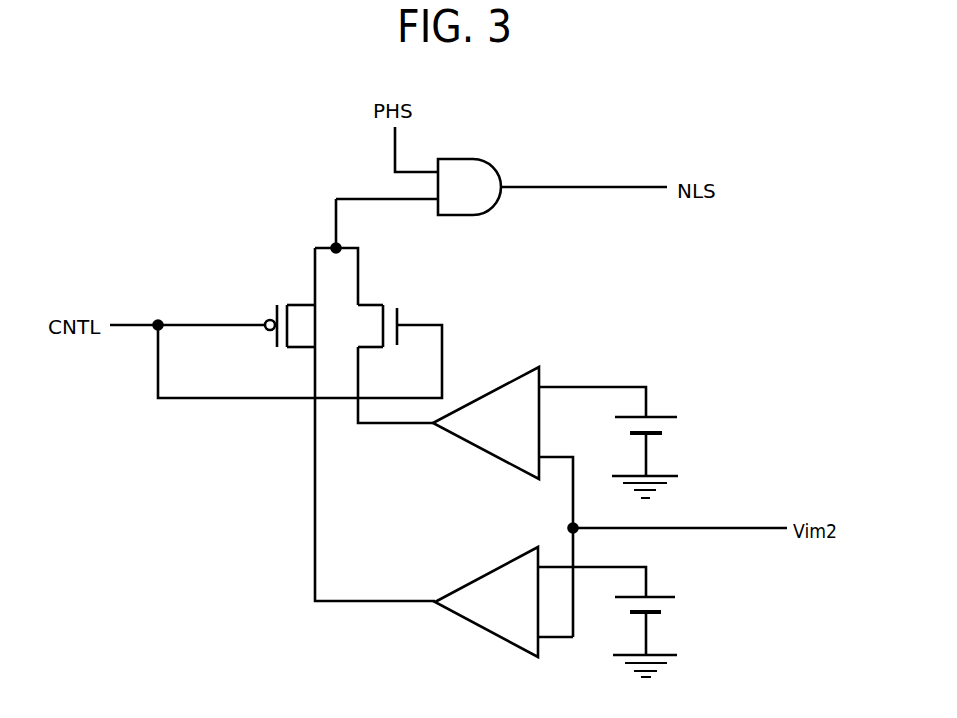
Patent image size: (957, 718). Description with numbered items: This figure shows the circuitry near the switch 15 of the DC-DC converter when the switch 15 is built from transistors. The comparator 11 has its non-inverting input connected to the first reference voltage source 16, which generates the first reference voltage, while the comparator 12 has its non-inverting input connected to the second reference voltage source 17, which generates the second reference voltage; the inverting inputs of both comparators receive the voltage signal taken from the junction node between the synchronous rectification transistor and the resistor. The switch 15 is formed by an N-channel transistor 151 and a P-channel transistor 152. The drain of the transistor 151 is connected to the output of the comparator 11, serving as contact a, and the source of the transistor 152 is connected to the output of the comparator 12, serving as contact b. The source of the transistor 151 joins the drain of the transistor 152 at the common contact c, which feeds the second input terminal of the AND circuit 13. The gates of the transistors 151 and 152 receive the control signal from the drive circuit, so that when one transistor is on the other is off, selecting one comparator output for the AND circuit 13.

The comparator 11 is at (483, 396).
The comparator 12 is at (475, 625).
The AND circuit 13 is at (462, 158).
The switch 15 is at (331, 404).
The N-channel transistor 151 is at (375, 303).
The P-channel transistor 152 is at (300, 312).
The first reference voltage source 16 is at (652, 413).
The second reference voltage source 17 is at (652, 594).